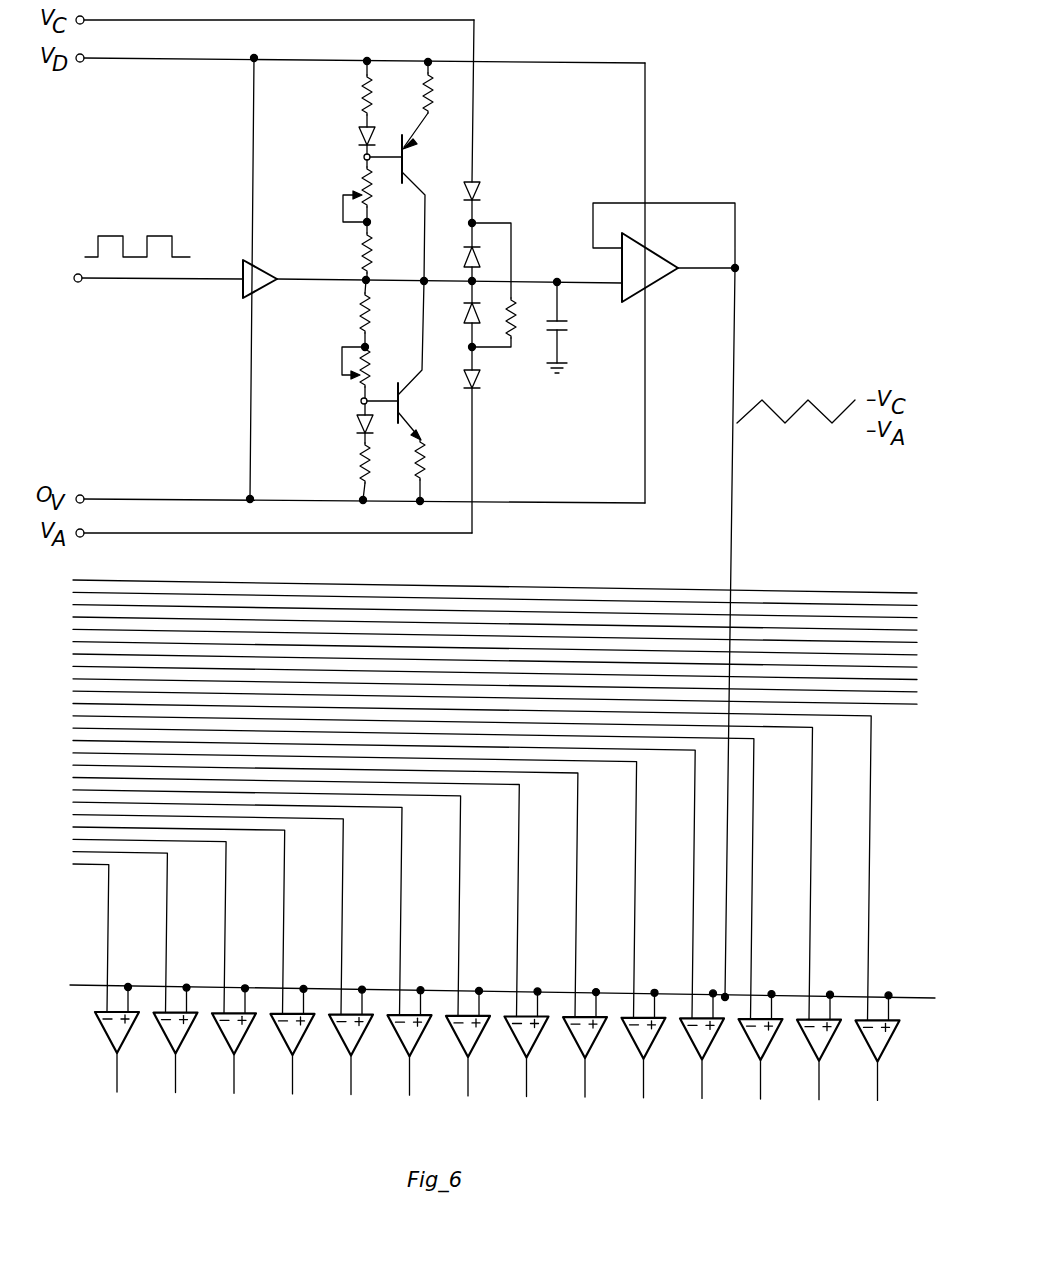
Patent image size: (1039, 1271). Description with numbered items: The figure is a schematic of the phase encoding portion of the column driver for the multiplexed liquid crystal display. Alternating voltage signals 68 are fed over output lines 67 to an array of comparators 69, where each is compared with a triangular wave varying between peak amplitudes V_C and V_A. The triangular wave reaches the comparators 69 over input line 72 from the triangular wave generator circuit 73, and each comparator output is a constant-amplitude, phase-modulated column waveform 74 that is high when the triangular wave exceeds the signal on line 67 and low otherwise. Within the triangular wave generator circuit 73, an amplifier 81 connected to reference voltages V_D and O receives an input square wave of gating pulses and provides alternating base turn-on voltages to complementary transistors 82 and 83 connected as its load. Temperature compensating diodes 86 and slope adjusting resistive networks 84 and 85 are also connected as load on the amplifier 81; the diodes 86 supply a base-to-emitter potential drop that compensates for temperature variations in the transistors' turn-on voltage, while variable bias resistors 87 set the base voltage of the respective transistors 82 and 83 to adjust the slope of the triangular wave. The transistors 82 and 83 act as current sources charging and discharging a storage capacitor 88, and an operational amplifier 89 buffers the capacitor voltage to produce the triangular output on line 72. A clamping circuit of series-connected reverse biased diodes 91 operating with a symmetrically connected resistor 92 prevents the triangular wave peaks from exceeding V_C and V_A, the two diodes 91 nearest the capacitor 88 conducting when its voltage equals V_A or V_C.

The output lines 67 is at (70, 573).
The alternating voltage signal 68 is at (462, 796).
The comparators 69 is at (166, 1038).
The input line 72 is at (733, 514).
The triangular wave generator circuit 73 is at (600, 62).
The column waveform 74 is at (497, 1061).
The amplifier 81 is at (258, 270).
The transistor 82 is at (405, 165).
The transistor 83 is at (405, 411).
The slope adjusting resistive network 84 is at (340, 77).
The slope adjusting resistive network 85 is at (340, 293).
The temperature compensating diodes 86 is at (372, 134).
The variable bias resistors 87 is at (371, 198).
The storage capacitor 88 is at (567, 327).
The operational amplifier 89 is at (653, 253).
The reverse biased diodes 91 is at (478, 193).
The resistor 92 is at (513, 324).